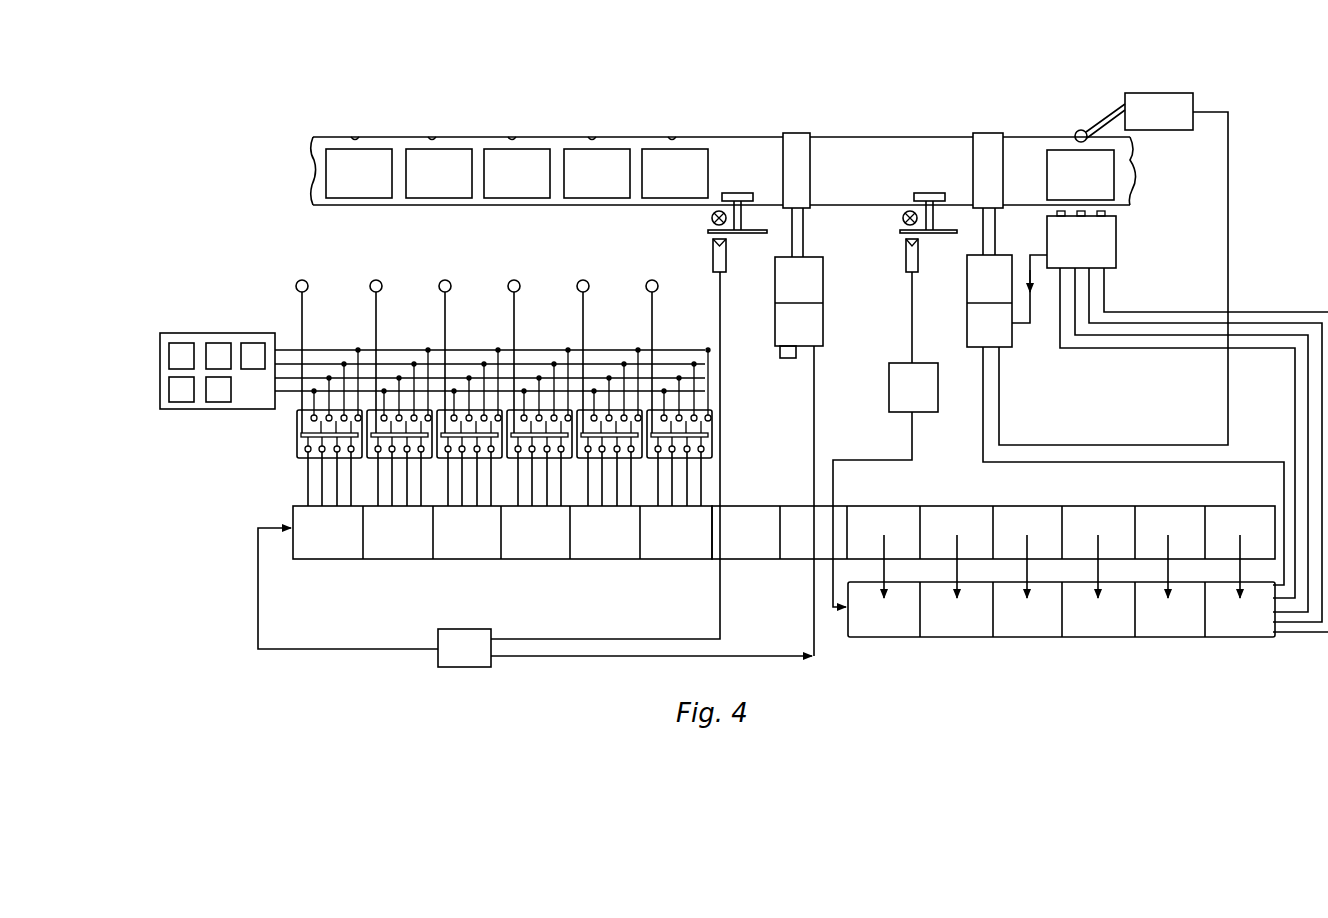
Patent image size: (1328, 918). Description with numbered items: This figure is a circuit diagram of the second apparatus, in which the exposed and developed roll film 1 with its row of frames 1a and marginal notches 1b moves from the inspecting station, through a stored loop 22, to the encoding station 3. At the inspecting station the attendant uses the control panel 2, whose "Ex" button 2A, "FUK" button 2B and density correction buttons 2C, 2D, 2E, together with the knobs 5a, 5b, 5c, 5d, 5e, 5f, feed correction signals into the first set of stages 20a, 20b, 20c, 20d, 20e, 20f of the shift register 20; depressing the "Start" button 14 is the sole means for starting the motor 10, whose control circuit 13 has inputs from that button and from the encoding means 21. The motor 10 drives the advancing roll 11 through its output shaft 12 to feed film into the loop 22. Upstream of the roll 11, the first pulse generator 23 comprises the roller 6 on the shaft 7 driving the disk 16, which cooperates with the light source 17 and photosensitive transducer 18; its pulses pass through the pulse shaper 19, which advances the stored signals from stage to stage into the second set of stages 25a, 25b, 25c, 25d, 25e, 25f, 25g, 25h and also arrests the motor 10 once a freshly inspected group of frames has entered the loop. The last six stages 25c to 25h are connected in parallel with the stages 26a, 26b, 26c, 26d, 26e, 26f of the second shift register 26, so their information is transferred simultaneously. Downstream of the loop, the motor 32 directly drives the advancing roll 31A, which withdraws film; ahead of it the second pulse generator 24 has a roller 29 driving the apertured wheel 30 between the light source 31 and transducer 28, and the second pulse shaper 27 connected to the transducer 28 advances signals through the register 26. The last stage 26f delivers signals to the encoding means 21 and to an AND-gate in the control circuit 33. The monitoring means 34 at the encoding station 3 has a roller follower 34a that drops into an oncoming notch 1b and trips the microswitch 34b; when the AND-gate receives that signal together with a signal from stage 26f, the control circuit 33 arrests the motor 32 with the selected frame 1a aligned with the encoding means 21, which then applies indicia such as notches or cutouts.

The photographic roll film 1 is at (553, 150).
The film frame 1a is at (372, 152).
The notch marker 1b is at (432, 137).
The control panel 2 is at (172, 322).
The "Ex" button 2A is at (188, 355).
The "FUK" button 2B is at (220, 350).
The density correction button 2C is at (256, 348).
The density correction button 2D is at (180, 398).
The density correction button 2E is at (222, 398).
The encoding station 3 is at (1136, 207).
The knob 5a is at (307, 291).
The knob 5b is at (381, 291).
The knob 5c is at (450, 291).
The knob 5d is at (519, 291).
The knob 5e is at (588, 291).
The knob 5f is at (657, 291).
The roller 6 is at (735, 195).
The shaft 7 is at (743, 219).
The motor 10 is at (812, 278).
The advancing roll 11 is at (797, 142).
The output shaft 12 is at (803, 228).
The control circuit 13 is at (816, 322).
The "Start" button 14 is at (785, 352).
The disk 16 is at (757, 235).
The light source 17 is at (711, 218).
The photosensitive transducer 18 is at (712, 255).
The pulse shaper 19 is at (462, 652).
The shift register 20 is at (353, 562).
The shift register stage 20a is at (313, 541).
The shift register stage 20b is at (398, 545).
The shift register stage 20c is at (466, 548).
The shift register stage 20d is at (538, 548).
The shift register stage 20e is at (605, 548).
The shift register stage 20f is at (669, 548).
The encoding means 21 is at (1100, 242).
The film loop 22 is at (878, 148).
The first pulse generator 23 is at (757, 182).
The second pulse generator 24 is at (930, 186).
The shift register stage 25a is at (737, 531).
The shift register stage 25b is at (797, 520).
The shift register stage 25c is at (868, 530).
The shift register stage 25d is at (941, 530).
The shift register stage 25e is at (1011, 530).
The shift register stage 25f is at (1083, 530).
The shift register stage 25g is at (1152, 532).
The shift register stage 25h is at (1224, 530).
The second shift register 26 is at (910, 639).
The second shift register stage 26a is at (868, 630).
The second shift register stage 26b is at (941, 630).
The second shift register stage 26c is at (1011, 630).
The second shift register stage 26d is at (1082, 630).
The second shift register stage 26e is at (1152, 630).
The last stage of second shift register 26f is at (1224, 630).
The second pulse shaper 27 is at (898, 390).
The transducer 28 is at (905, 265).
The roller 29 is at (920, 196).
The apertured wheel 30 is at (930, 234).
The light source 31 is at (902, 216).
The advancing roll 31A is at (978, 148).
The motor 32 is at (997, 275).
The control circuit 33 is at (966, 325).
The monitoring means 34 is at (1163, 82).
The roller follower 34a is at (1078, 130).
The microswitch 34b is at (1195, 102).